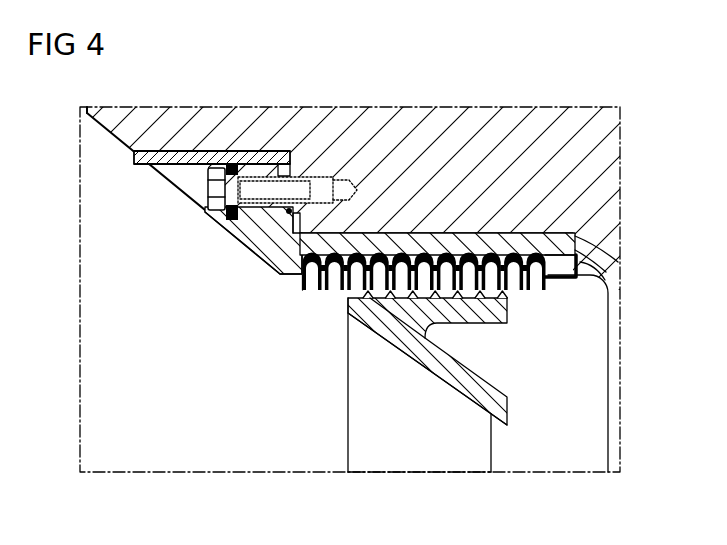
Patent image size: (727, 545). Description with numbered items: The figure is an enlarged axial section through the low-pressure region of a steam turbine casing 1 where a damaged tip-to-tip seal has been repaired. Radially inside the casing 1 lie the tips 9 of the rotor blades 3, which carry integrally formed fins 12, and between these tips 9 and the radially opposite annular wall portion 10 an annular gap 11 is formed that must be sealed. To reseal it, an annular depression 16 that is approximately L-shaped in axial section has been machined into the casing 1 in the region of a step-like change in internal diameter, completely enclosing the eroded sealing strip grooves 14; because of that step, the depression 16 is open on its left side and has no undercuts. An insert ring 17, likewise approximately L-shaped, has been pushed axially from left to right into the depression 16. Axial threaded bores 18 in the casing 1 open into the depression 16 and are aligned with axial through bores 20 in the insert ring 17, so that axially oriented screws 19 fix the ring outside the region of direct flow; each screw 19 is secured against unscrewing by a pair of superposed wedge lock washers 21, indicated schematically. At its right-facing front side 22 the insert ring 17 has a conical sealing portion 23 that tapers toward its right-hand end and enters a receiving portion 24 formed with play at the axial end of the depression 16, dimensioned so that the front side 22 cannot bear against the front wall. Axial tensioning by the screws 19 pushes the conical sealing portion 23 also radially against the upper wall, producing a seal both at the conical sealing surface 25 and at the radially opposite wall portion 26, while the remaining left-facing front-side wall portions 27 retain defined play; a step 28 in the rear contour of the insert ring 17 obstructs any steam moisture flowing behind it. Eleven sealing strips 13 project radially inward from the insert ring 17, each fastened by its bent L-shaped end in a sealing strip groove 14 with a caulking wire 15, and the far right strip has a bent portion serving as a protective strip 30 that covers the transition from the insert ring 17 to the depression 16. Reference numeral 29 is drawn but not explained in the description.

The casing 1 is at (437, 120).
The rotor blade 3 is at (404, 460).
The rotor blade tip 9 is at (448, 378).
The annular wall portion 10 is at (412, 235).
The annular gap 11 is at (466, 300).
The fin 12 is at (349, 348).
The sealing strip 13 is at (302, 283).
The sealing strip groove 14 is at (300, 265).
The caulking wire 15 is at (309, 275).
The annular depression 16 is at (190, 150).
The insert ring 17 is at (473, 220).
The axial threaded bore 18 is at (314, 174).
The screw 19 is at (208, 190).
The axial through bore 20 is at (177, 173).
The wedge lock washer 21 is at (232, 165).
The front side 22 is at (603, 222).
The conical sealing portion 23 is at (590, 243).
The receiving portion 24 is at (577, 235).
The conical sealing surface 25 is at (592, 268).
The wall portion 26 is at (540, 235).
The front-side wall portion 27 is at (284, 170).
The step 28 is at (282, 222).
The inclined arm 29 is at (400, 300).
The protective strip 30 is at (561, 280).